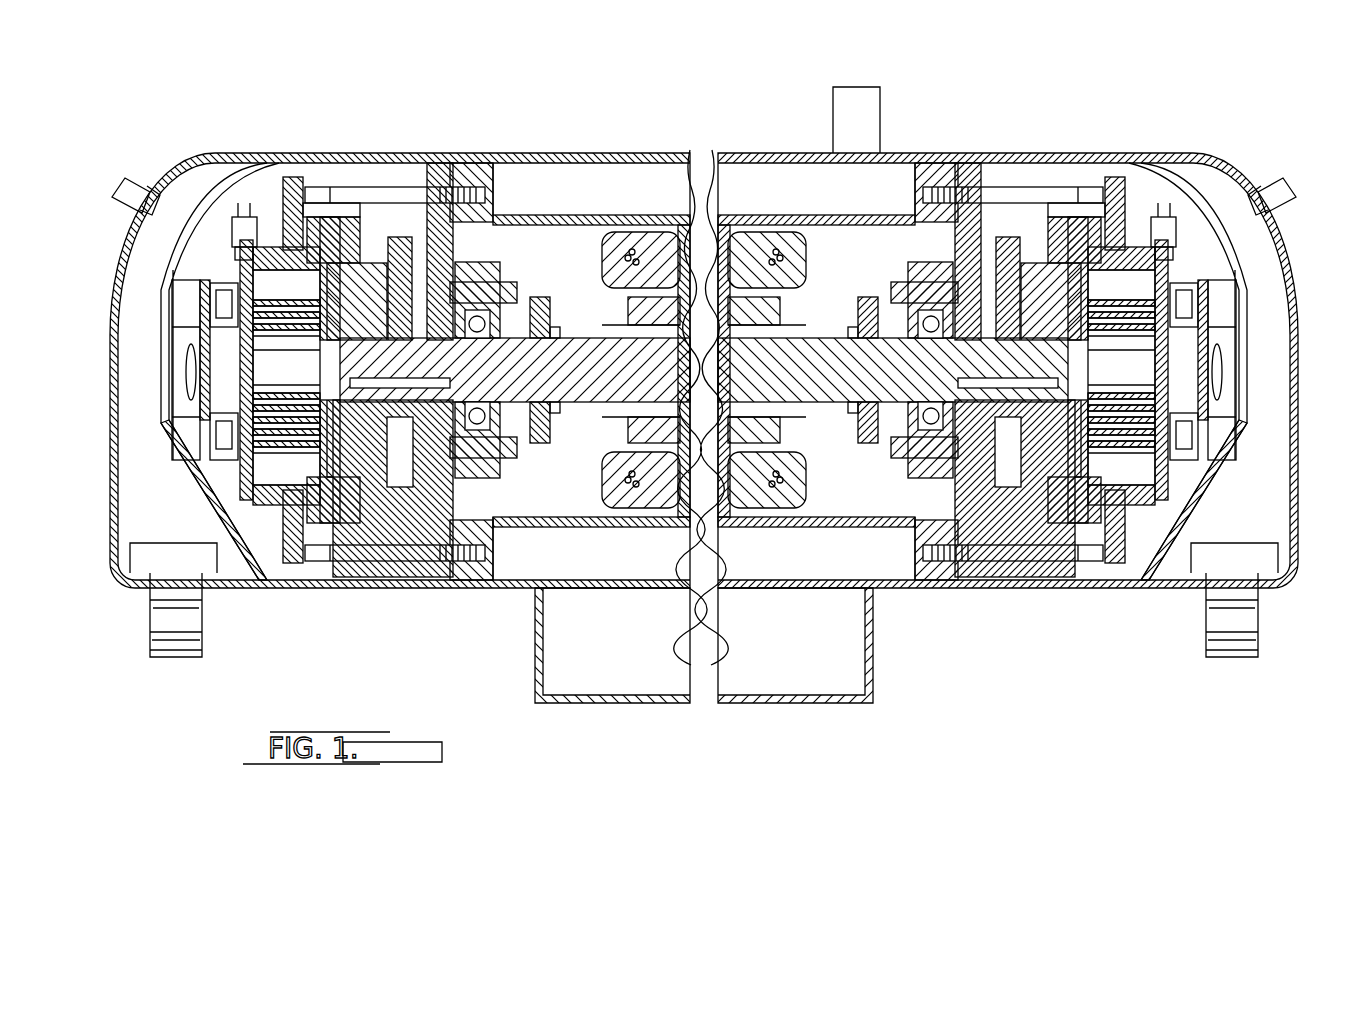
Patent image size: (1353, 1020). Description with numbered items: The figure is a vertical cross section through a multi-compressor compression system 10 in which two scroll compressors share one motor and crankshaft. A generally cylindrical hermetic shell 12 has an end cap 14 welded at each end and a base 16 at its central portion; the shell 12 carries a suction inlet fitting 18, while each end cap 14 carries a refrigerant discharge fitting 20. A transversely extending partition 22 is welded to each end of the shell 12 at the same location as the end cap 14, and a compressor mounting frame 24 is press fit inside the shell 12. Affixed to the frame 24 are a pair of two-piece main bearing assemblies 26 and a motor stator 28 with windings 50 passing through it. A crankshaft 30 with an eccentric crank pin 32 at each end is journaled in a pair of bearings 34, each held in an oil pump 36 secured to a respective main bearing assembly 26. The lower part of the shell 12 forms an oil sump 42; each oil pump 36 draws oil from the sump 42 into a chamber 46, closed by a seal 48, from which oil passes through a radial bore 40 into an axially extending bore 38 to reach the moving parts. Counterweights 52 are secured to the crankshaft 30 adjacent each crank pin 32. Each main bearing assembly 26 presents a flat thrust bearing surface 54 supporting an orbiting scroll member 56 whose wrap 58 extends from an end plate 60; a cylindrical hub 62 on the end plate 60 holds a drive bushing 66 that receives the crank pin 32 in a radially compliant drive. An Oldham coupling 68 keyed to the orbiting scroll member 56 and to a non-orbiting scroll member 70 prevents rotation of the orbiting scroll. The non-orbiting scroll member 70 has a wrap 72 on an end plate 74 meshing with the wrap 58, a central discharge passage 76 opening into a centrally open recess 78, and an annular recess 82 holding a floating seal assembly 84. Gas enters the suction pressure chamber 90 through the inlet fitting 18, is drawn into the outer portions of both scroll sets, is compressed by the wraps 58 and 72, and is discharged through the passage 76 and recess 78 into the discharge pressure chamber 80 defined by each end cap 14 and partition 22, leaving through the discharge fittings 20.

The compression system 10 is at (758, 46).
The hermetic shell 12 is at (757, 153).
The end cap 14 is at (190, 153).
The base 16 is at (778, 703).
The suction inlet fitting 18 is at (875, 120).
The refrigerant discharge fitting 20 is at (156, 620).
The partition 22 is at (184, 494).
The compressor mounting frame 24 is at (480, 163).
The main bearing assembly 26 is at (435, 582).
The motor stator 28 is at (722, 470).
The crankshaft 30 is at (798, 386).
The crank pin 32 is at (330, 380).
The bearing 34 is at (749, 371).
The oil pump 36 is at (530, 297).
The axially extending bore 38 is at (502, 345).
The radial extending bore 40 is at (440, 383).
The oil sump 42 is at (624, 572).
The chamber 46 is at (467, 323).
The seal 48 is at (475, 425).
The windings 50 is at (790, 500).
The counterweight 52 is at (402, 263).
The thrust bearing surface 54 is at (322, 245).
The orbiting scroll member 56 is at (310, 380).
The wrap 58 is at (307, 407).
The end plate 60 is at (1045, 300).
The cylindrical hub 62 is at (365, 337).
The drive bushing 66 is at (315, 380).
The Oldham coupling 68 is at (342, 240).
The non-orbiting scroll member 70 is at (272, 234).
The wrap 72 is at (704, 377).
The end plate 74 is at (212, 448).
The discharge passage 76 is at (243, 383).
The centrally open recess 78 is at (223, 370).
The discharge pressure chamber 80 is at (188, 233).
The annular recess 82 is at (250, 380).
The floating seal assembly 84 is at (210, 297).
The suction pressure chamber 90 is at (788, 198).